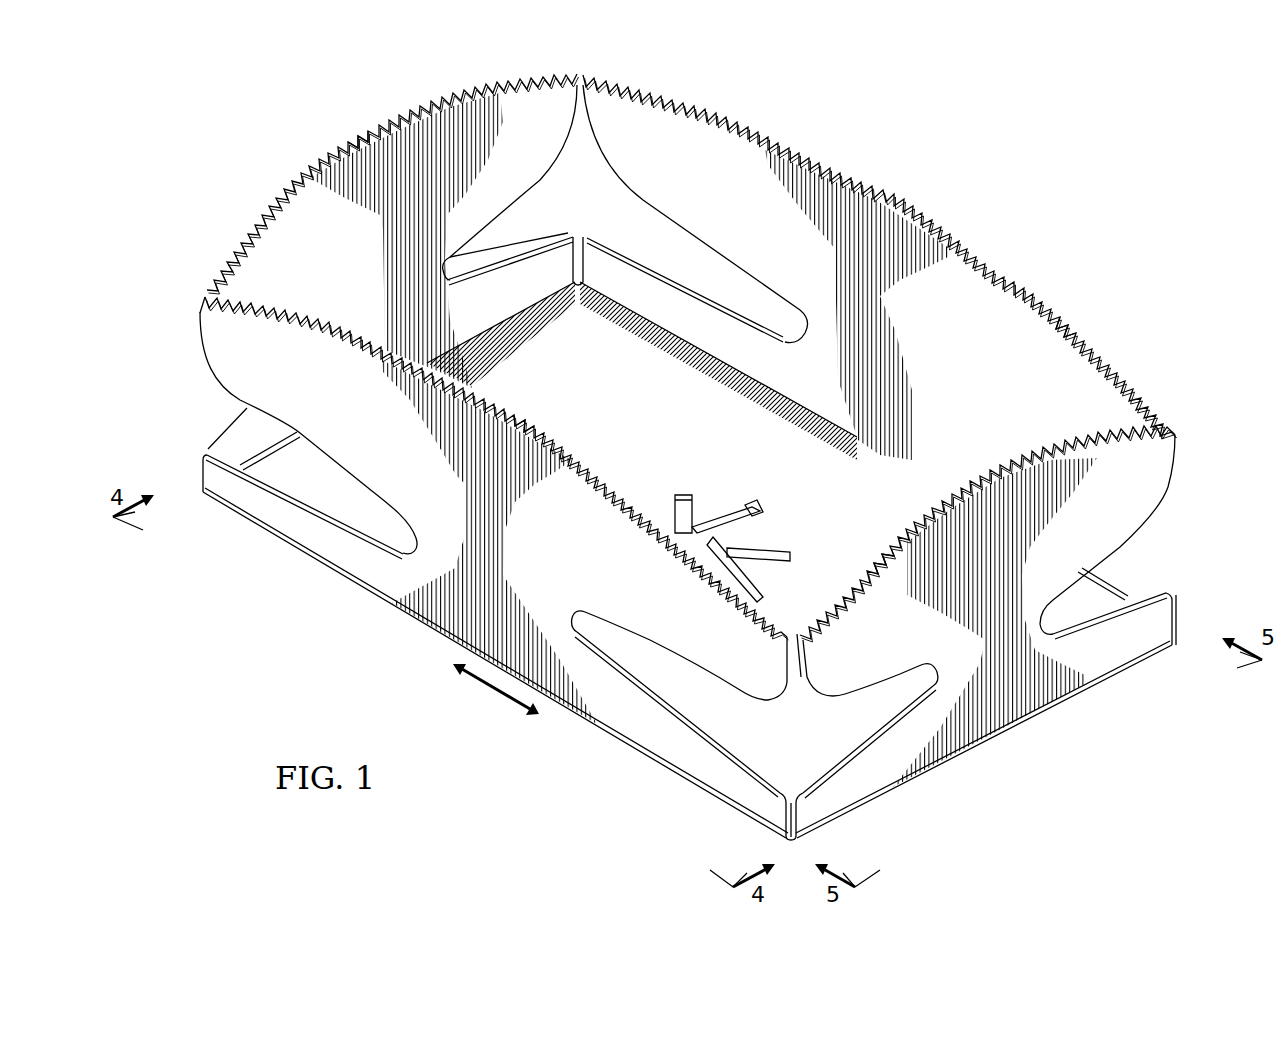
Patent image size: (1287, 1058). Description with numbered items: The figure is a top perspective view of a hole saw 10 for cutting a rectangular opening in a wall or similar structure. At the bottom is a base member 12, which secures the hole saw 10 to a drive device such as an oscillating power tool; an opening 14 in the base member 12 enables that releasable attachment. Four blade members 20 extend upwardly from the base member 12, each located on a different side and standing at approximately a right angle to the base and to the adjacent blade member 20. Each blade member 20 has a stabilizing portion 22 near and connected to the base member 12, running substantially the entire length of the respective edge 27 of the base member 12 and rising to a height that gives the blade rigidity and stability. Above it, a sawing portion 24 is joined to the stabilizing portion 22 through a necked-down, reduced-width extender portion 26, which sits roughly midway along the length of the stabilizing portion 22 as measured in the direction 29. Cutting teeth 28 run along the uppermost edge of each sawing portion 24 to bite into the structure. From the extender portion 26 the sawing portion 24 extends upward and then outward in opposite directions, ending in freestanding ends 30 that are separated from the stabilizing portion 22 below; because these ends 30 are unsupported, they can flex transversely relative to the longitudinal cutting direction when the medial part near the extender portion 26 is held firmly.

The hole saw 10 is at (689, 454).
The base member 12 is at (676, 434).
The opening 14 is at (748, 500).
The blade member 20 is at (280, 184).
The stabilizing portion 22 is at (733, 790).
The sawing portion 24 is at (229, 366).
The extender portion 26 is at (584, 608).
The edge 27 is at (277, 538).
The cutting teeth 28 is at (356, 132).
The direction 29 is at (498, 690).
The freestanding end 30 is at (541, 180).